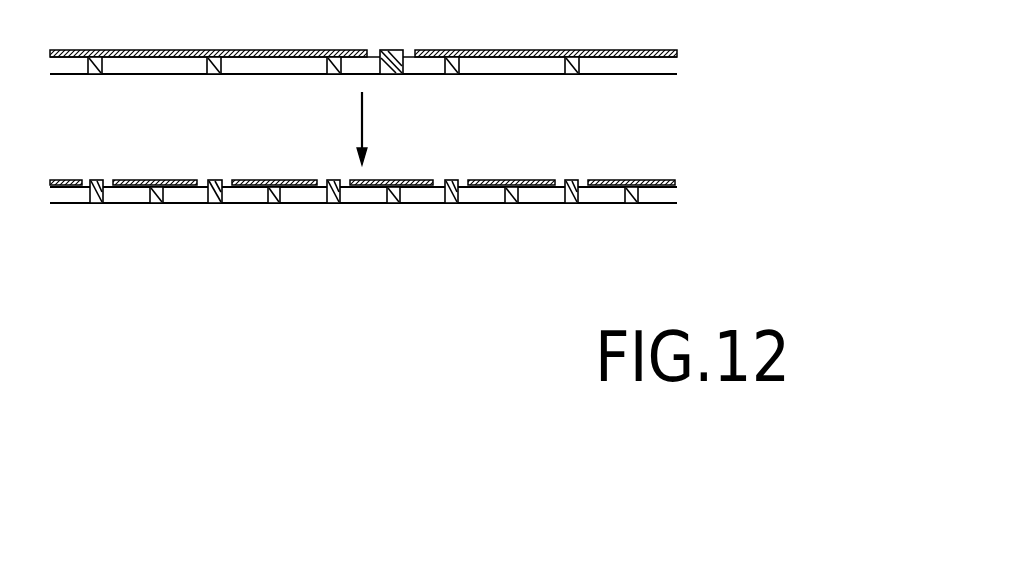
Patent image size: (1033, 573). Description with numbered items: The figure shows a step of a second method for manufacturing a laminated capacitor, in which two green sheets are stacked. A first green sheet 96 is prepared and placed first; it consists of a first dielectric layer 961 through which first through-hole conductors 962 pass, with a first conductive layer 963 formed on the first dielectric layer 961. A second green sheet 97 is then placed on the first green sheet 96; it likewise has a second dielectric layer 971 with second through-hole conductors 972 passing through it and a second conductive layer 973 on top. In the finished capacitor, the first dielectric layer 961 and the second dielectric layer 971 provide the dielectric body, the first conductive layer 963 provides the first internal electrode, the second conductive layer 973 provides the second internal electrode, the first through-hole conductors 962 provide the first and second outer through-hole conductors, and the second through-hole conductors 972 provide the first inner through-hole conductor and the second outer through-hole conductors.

The first green sheet 96 is at (684, 188).
The first dielectric layer 961 is at (662, 196).
The first through-hole conductors 962 is at (96, 205).
The first conductive layer 963 is at (137, 180).
The second green sheet 97 is at (684, 61).
The second dielectric layer 971 is at (654, 66).
The second through-hole conductors 972 is at (95, 76).
The second conductive layer 973 is at (267, 50).